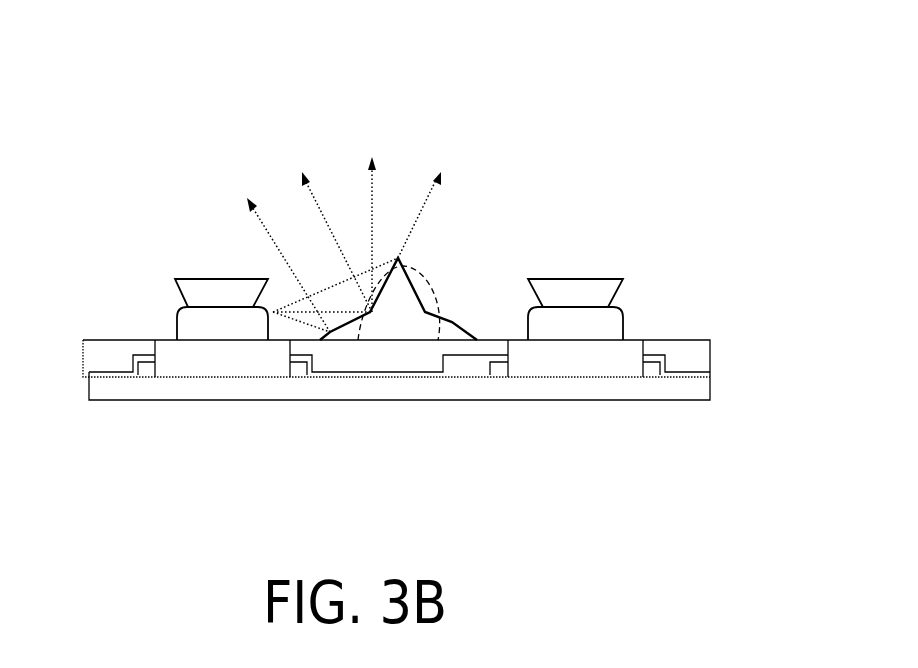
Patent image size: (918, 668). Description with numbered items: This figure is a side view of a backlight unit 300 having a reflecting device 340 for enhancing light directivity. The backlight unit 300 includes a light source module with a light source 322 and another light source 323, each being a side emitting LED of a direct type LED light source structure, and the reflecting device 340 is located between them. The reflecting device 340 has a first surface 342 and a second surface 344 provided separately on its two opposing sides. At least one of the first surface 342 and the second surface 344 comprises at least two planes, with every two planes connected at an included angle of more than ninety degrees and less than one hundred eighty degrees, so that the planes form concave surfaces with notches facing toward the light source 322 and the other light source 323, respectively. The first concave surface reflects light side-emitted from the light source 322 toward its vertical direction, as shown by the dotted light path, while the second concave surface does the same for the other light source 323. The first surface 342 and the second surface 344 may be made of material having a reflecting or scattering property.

The backlight unit 300 is at (480, 137).
The light source 322 is at (203, 297).
The other light source 323 is at (589, 297).
The reflecting device 340 is at (412, 270).
The first surface 342 is at (357, 340).
The second surface 344 is at (440, 285).